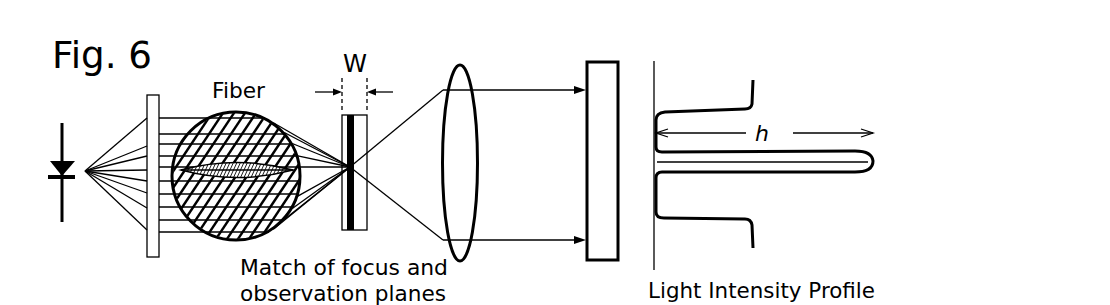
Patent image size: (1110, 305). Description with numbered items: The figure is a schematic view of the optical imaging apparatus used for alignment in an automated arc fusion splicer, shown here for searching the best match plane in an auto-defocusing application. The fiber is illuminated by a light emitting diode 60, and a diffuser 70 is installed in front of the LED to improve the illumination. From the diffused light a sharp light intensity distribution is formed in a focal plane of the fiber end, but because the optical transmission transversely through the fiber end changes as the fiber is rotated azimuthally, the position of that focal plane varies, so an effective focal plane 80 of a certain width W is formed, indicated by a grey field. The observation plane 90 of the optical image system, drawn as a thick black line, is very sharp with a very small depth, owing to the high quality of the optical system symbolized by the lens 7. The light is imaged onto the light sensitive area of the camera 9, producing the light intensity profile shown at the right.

The light emitting diode 60 is at (72, 182).
The diffuser 70 is at (148, 246).
The effective focal plane 80 is at (364, 212).
The observation plane 90 is at (351, 230).
The lens 7 is at (468, 247).
The camera 9 is at (597, 257).